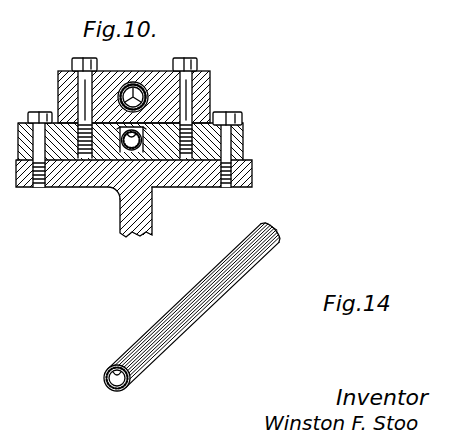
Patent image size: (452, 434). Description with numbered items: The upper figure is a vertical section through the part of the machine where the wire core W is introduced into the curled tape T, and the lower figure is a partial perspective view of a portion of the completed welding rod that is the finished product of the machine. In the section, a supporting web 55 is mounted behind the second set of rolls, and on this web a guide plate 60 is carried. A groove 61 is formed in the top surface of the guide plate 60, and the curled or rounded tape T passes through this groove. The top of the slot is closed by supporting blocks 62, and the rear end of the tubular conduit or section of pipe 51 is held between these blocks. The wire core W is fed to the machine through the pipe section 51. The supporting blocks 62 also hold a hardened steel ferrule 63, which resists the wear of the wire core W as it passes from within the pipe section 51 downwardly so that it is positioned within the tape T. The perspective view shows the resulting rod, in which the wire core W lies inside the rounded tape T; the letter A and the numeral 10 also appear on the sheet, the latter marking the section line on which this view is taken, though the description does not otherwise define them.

In FIG. 10, the section of pipe 51 is at (164, 79).
In FIG. 10, the guide plate 60 is at (203, 143).
In FIG. 10, the supporting web 55 is at (152, 191).
In FIG. 10, the stem 10 is at (134, 218).
In FIG. 10, the hardened steel ferrule 63 is at (118, 82).
In FIG. 10, the supporting blocks 62 is at (203, 90).
In FIG. 10, the groove 61 is at (116, 131).
In FIG. 10, the wire core W is at (140, 84).
In FIG. 14, the wire core W is at (276, 230).
In FIG. 10, the armature ring A is at (128, 150).
In FIG. 14, the armature ring A is at (118, 385).
In FIG. 14, the tape T is at (184, 327).